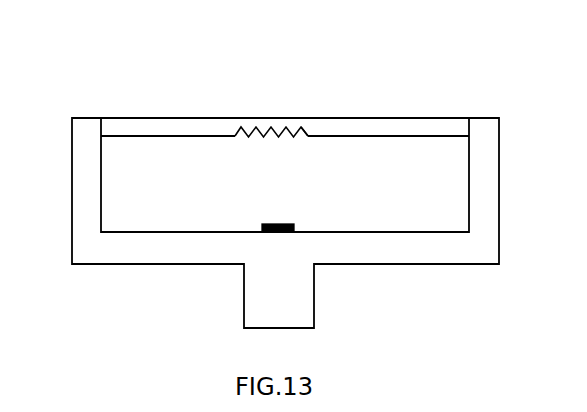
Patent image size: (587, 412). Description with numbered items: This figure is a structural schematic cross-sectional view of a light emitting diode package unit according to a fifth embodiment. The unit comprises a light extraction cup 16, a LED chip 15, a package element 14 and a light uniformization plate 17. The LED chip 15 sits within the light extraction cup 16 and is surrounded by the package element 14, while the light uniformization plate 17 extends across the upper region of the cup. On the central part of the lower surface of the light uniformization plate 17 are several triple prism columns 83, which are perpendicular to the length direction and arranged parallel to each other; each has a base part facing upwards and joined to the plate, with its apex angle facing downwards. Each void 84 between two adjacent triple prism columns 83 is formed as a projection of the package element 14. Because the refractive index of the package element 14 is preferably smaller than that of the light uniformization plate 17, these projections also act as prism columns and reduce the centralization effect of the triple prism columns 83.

The package element 14 is at (178, 202).
The LED chip 15 is at (262, 224).
The light extraction cup 16 is at (355, 264).
The light uniformization plate 17 is at (133, 127).
The triple prism columns 83 is at (250, 130).
The void 84 is at (305, 130).